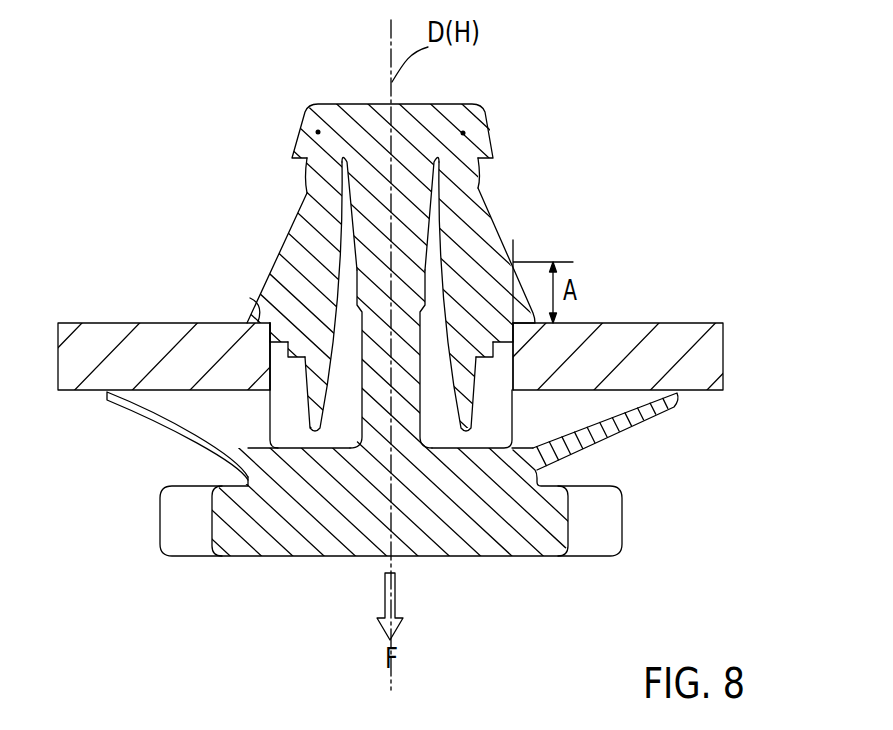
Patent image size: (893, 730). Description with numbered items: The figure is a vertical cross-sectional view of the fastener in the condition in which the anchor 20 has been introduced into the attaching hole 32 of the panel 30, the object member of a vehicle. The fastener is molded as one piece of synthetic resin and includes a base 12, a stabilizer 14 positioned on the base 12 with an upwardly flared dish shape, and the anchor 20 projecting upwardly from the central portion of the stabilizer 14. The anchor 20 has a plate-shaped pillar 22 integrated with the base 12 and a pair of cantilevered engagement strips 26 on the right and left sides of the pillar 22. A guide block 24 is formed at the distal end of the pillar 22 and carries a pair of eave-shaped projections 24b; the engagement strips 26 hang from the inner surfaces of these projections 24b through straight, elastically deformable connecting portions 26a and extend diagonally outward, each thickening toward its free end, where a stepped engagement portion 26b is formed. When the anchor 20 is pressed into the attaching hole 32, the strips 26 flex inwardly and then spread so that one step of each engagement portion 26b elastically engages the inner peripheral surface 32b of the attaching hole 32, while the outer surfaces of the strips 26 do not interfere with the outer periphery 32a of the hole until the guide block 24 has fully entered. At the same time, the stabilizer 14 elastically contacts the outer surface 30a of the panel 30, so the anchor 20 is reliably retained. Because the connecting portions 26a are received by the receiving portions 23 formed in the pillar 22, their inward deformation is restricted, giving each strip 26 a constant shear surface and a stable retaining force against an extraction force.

The anchor 20 is at (530, 152).
The guide block 24 is at (376, 100).
The eave-shaped projections 24b is at (318, 132).
The connecting portions 26a is at (325, 175).
The receiving portions 23 is at (353, 194).
The engagement strips 26 is at (278, 260).
The engagement portion 26b is at (288, 354).
The pillar 22 is at (365, 380).
The base 12 is at (517, 523).
The stabilizer 14 is at (633, 417).
The attaching hole 32 is at (283, 386).
The outer periphery of the attaching hole 32a is at (270, 393).
The inner peripheral surface of the attaching hole 32b is at (255, 310).
The panel 30 is at (672, 340).
The outer surface of the panel 30a is at (673, 410).